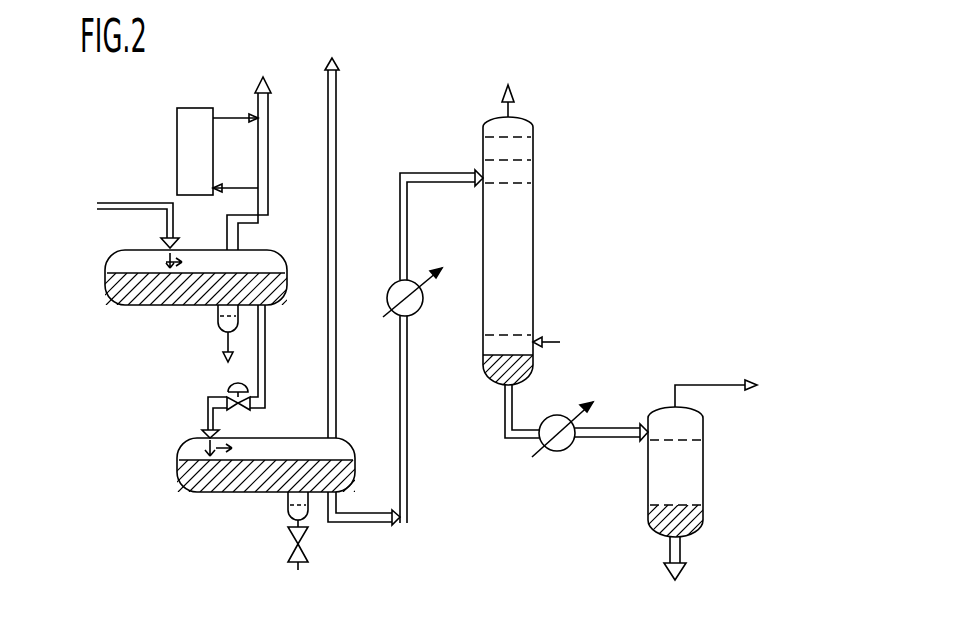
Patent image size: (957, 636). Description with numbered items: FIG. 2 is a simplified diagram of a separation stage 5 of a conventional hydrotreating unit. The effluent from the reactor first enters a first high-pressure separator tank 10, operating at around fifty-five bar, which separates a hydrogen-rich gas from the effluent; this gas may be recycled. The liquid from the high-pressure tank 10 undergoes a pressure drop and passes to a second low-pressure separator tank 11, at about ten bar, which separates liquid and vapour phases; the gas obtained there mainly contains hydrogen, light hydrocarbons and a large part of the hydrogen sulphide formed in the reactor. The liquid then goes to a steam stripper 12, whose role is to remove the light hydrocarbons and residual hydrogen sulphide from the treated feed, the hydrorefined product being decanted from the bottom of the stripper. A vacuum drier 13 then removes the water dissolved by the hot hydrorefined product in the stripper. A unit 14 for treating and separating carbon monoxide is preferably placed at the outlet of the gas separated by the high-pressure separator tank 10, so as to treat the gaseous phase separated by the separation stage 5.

The separation stage 5 is at (628, 113).
The first high-pressure separator tank 10 is at (105, 260).
The second low-pressure separator tank 11 is at (178, 445).
The steam stripper 12 is at (524, 265).
The vacuum drier 13 is at (680, 472).
The unit for treating and separating carbon monoxide 14 is at (192, 132).